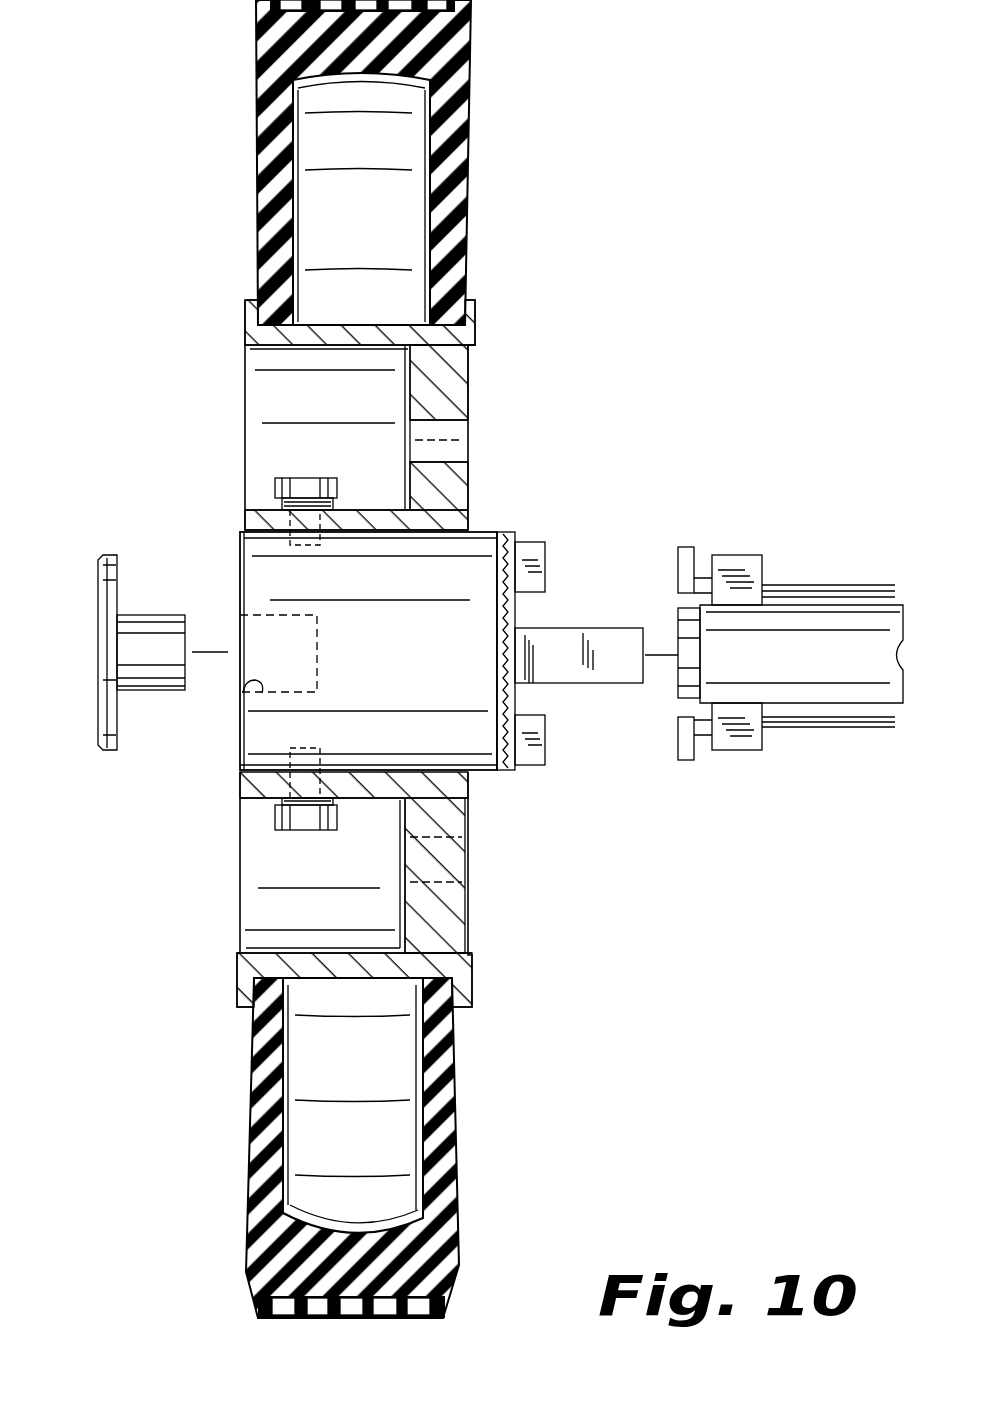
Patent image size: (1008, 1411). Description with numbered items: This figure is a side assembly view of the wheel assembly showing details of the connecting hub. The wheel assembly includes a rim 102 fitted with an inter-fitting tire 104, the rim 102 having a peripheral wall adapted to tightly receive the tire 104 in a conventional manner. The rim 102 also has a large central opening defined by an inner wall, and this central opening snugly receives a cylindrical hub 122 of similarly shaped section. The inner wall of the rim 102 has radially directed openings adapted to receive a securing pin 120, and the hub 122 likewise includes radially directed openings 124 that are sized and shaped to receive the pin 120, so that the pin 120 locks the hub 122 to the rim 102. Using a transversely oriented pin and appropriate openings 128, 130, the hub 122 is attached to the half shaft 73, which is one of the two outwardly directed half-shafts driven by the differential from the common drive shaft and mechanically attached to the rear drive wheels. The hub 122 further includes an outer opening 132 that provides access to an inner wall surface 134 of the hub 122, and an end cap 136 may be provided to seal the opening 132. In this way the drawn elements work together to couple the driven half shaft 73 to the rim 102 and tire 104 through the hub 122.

The rim 102 is at (347, 625).
The tire 104 is at (260, 110).
The opening 130 is at (462, 440).
The securing pin 120 is at (278, 490).
The radially directed openings 124 is at (285, 538).
The cylindrical hub 122 is at (462, 570).
The outer opening 132 is at (230, 630).
The inner wall surface 134 is at (232, 700).
The opening 128 is at (468, 862).
The end cap 136 is at (86, 583).
The half-shaft 73 is at (613, 663).